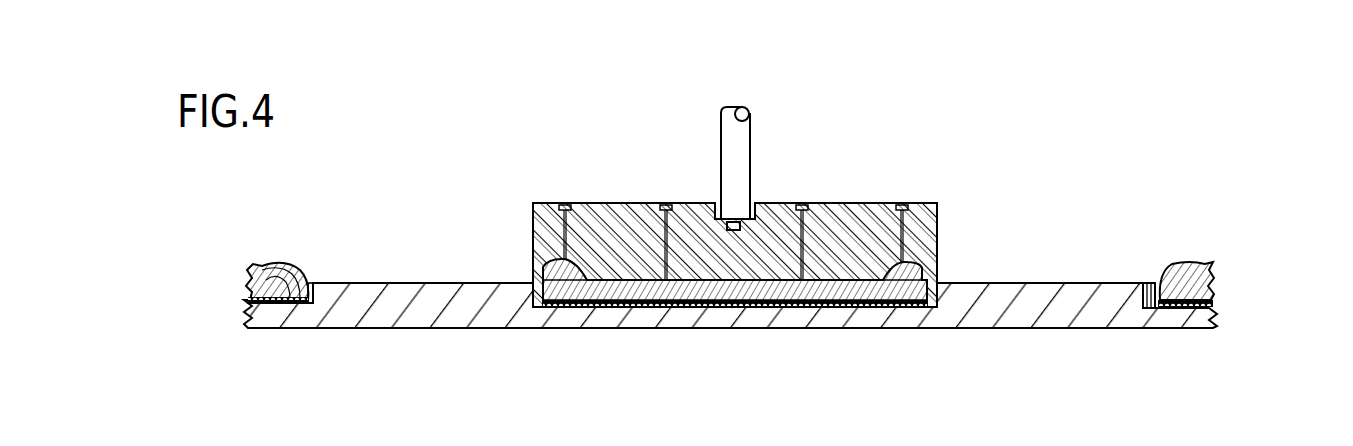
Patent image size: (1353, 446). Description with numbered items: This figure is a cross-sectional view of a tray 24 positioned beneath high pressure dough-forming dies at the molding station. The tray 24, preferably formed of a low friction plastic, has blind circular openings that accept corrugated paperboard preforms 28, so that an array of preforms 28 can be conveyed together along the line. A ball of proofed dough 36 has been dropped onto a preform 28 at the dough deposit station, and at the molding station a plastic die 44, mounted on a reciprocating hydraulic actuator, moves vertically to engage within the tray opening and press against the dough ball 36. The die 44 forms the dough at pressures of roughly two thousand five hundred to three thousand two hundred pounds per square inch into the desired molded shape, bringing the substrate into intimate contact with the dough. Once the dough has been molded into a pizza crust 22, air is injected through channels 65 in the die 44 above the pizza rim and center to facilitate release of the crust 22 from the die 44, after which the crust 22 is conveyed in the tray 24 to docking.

The pizza crust 22 is at (1163, 268).
The tray 24 is at (1073, 283).
The corrugated paperboard preform 28 is at (257, 300).
The dough ball 36 is at (273, 264).
The plastic die 44 is at (937, 257).
The air channel 65 is at (666, 203).